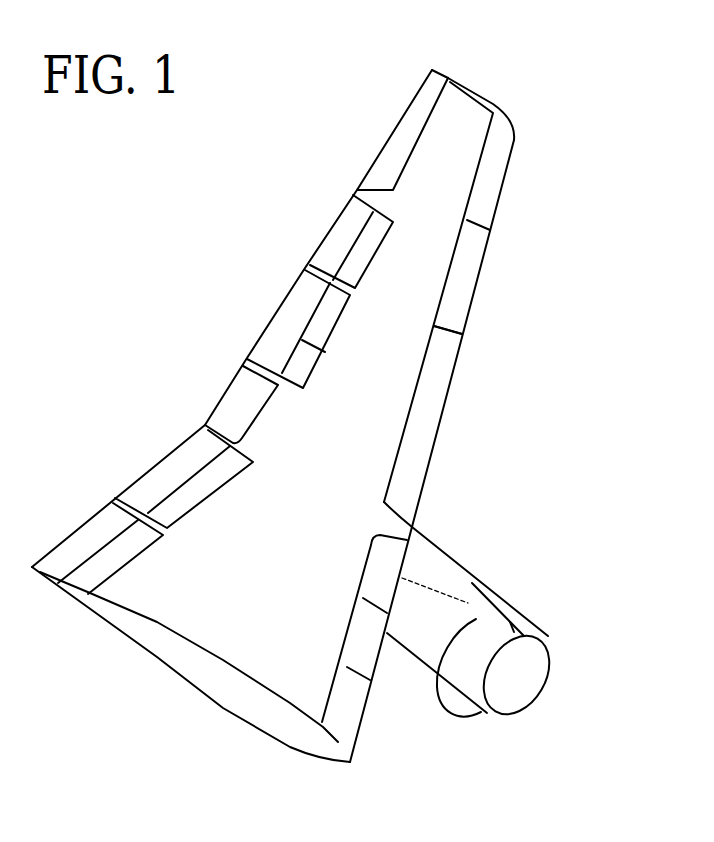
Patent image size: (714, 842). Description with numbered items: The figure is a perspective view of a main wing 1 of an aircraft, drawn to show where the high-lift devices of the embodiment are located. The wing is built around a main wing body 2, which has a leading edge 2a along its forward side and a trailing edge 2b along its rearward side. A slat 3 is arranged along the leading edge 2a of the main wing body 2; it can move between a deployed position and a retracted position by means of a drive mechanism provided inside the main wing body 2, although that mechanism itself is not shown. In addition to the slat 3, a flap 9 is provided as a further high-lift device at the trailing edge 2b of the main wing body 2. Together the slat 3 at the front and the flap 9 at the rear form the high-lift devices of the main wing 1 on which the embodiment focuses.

The main wing 1 is at (566, 143).
The main wing body 2 is at (465, 128).
The leading edge 2a is at (433, 345).
The trailing edge 2b is at (288, 348).
The slat 3 is at (487, 193).
The flap 9 is at (337, 233).